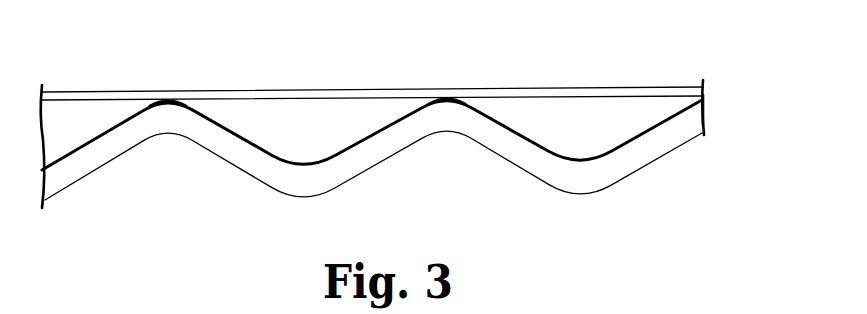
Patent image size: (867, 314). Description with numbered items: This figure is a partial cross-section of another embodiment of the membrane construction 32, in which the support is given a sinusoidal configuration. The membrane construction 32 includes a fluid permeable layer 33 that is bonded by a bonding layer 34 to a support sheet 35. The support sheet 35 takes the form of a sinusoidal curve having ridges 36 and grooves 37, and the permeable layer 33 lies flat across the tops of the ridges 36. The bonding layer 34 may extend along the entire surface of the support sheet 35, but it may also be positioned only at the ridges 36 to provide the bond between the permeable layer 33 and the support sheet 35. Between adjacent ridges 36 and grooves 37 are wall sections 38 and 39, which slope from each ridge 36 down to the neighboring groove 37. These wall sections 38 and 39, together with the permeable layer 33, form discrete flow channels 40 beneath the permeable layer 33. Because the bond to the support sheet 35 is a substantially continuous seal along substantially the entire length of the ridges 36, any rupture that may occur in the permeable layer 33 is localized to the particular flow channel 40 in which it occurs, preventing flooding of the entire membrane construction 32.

The membrane construction 32 is at (692, 58).
The fluid permeable layer 33 is at (607, 85).
The bonding layer 34 is at (247, 138).
The support sheet 35 is at (707, 116).
The ridges 36 is at (168, 107).
The grooves 37 is at (328, 177).
The wall section 38 is at (240, 158).
The wall section 39 is at (382, 143).
The flow channels 40 is at (310, 123).